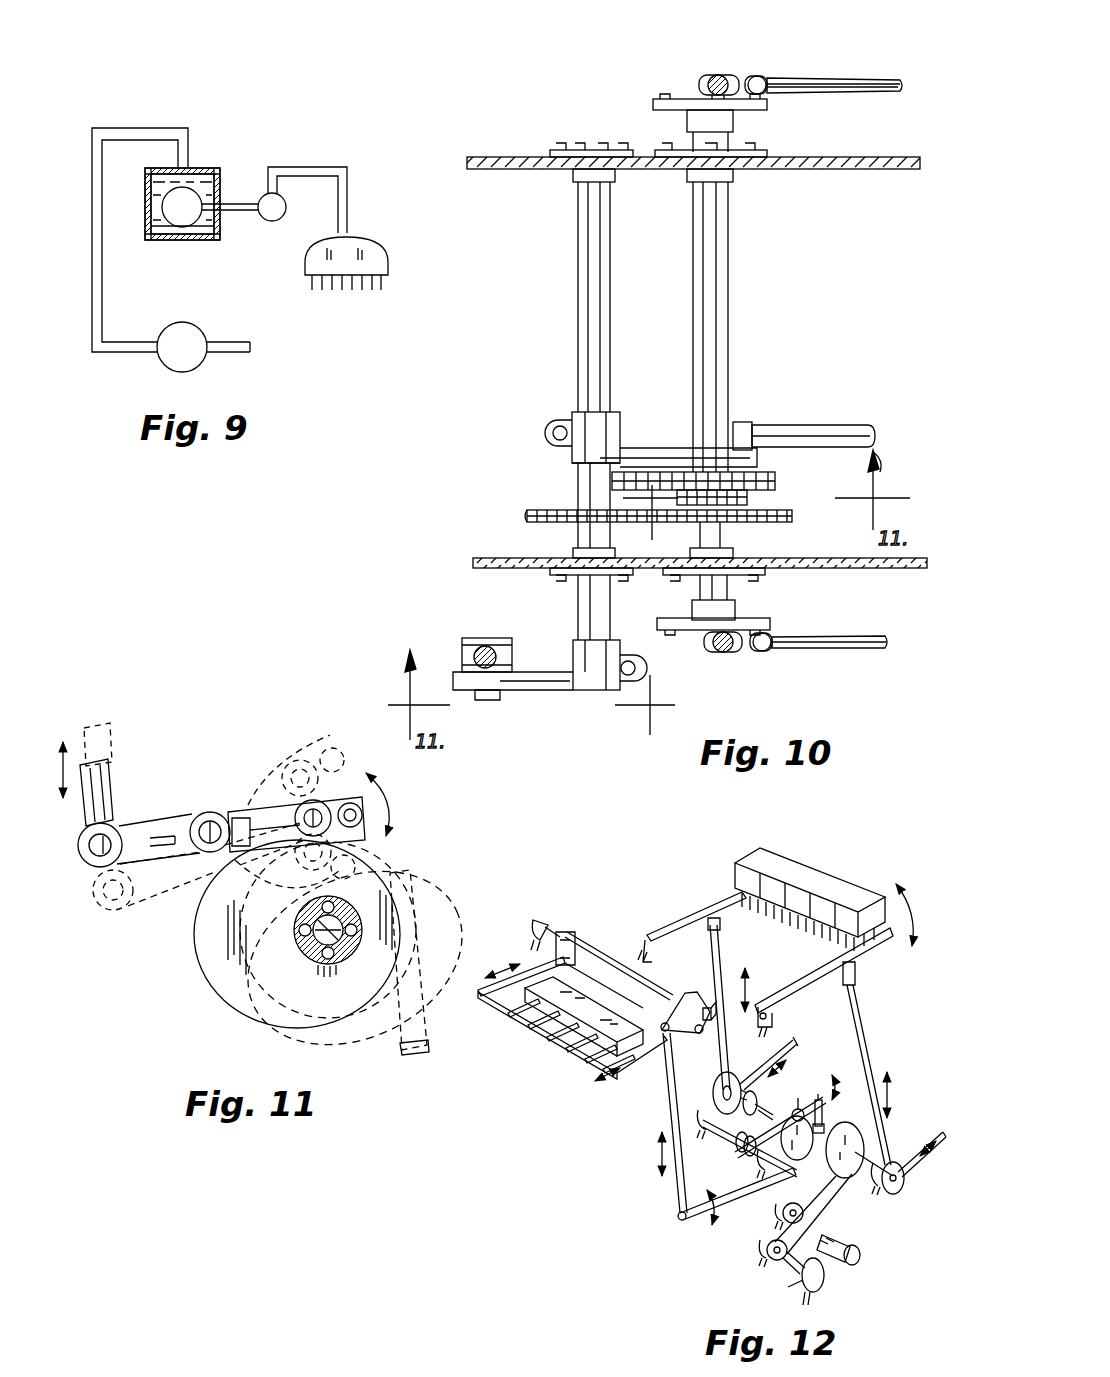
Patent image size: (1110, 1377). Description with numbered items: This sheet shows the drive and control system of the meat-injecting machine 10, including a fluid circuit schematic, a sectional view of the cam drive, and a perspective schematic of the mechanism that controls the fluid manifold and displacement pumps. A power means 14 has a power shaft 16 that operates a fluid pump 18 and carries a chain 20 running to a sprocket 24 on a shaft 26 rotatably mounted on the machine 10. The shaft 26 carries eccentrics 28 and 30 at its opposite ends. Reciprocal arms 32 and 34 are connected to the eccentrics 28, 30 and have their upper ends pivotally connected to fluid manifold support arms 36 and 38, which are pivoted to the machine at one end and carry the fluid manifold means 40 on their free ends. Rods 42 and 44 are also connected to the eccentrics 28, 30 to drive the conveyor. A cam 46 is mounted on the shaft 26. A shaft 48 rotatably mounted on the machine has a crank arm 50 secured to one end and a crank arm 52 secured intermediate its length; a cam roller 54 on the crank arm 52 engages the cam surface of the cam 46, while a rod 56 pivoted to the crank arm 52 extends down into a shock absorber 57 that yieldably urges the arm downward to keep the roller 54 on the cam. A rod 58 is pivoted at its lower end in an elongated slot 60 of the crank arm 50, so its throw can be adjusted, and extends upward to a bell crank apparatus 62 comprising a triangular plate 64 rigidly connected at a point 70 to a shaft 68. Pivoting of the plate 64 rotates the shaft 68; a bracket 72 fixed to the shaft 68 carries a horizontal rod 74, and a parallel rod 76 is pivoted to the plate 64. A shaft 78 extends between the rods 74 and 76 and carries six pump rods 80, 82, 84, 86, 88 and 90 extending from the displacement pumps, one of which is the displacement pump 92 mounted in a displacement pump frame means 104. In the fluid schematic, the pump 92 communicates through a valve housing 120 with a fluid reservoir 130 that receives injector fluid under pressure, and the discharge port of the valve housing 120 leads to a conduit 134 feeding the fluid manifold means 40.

In FIG. 10, the machine 10 is at (893, 572).
In FIG. 12, the power means 14 is at (848, 1240).
In FIG. 12, the power shaft 16 is at (772, 1260).
In FIG. 9, the fluid pump 18 is at (196, 328).
In FIG. 12, the fluid pump 18 is at (824, 1280).
In FIG. 10, the chain 20 is at (527, 516).
In FIG. 12, the chain 20 is at (825, 1198).
In FIG. 10, the sprocket 24 is at (792, 517).
In FIG. 12, the sprocket 24 is at (862, 1140).
In FIG. 10, the shaft 26 is at (728, 278).
In FIG. 11, the shaft 26 is at (300, 926).
In FIG. 12, the shaft 26 is at (897, 1190).
In FIG. 10, the eccentric 28 is at (662, 99).
In FIG. 12, the eccentric 28 is at (718, 1090).
In FIG. 10, the eccentric 30 is at (770, 624).
In FIG. 12, the eccentric 30 is at (904, 1184).
In FIG. 10, the reciprocal arm 32 is at (720, 74).
In FIG. 12, the reciprocal arm 32 is at (720, 962).
In FIG. 10, the reciprocal arm 34 is at (724, 654).
In FIG. 12, the reciprocal arm 34 is at (862, 1030).
In FIG. 12, the fluid manifold support arm 36 is at (718, 896).
In FIG. 12, the fluid manifold support arm 38 is at (858, 950).
In FIG. 9, the fluid manifold means 40 is at (380, 235).
In FIG. 12, the fluid manifold means 40 is at (826, 858).
In FIG. 10, the rod 42 is at (860, 80).
In FIG. 12, the rod 42 is at (780, 1040).
In FIG. 10, the rod 44 is at (870, 648).
In FIG. 12, the rod 44 is at (940, 1135).
In FIG. 10, the cam 46 is at (777, 482).
In FIG. 11, the cam 46 is at (225, 996).
In FIG. 12, the cam 46 is at (803, 1158).
In FIG. 10, the shaft 48 is at (578, 292).
In FIG. 11, the shaft 48 is at (212, 820).
In FIG. 12, the shaft 48 is at (728, 1133).
In FIG. 10, the crank arm 50 is at (545, 683).
In FIG. 11, the crank arm 50 is at (175, 818).
In FIG. 12, the crank arm 50 is at (682, 1220).
In FIG. 10, the crank arm 52 is at (658, 448).
In FIG. 11, the crank arm 52 is at (270, 810).
In FIG. 12, the crank arm 52 is at (770, 1128).
In FIG. 10, the cam roller 54 is at (747, 498).
In FIG. 11, the cam roller 54 is at (303, 760).
In FIG. 12, the cam roller 54 is at (802, 1108).
In FIG. 10, the rod 56 is at (840, 427).
In FIG. 11, the rod 56 is at (400, 1052).
In FIG. 12, the rod 56 is at (825, 1112).
In FIG. 12, the shock absorber 57 is at (826, 1129).
In FIG. 10, the rod 58 is at (480, 645).
In FIG. 11, the rod 58 is at (112, 763).
In FIG. 12, the rod 58 is at (676, 1180).
In FIG. 11, the elongated slot 60 is at (148, 840).
In FIG. 12, the bell crank apparatus 62 is at (565, 925).
In FIG. 12, the triangular-shaped plate 64 is at (672, 1000).
In FIG. 12, the shaft 68 is at (606, 962).
In FIG. 12, the connection 70 is at (708, 1006).
In FIG. 12, the bracket 72 is at (575, 935).
In FIG. 12, the rod 74 is at (530, 978).
In FIG. 12, the rod 76 is at (660, 1080).
In FIG. 12, the shaft 78 is at (492, 996).
In FIG. 12, the pump rod 80 is at (508, 1016).
In FIG. 12, the pump rod 82 is at (528, 1028).
In FIG. 12, the pump rod 84 is at (547, 1040).
In FIG. 12, the pump rod 86 is at (566, 1051).
In FIG. 12, the pump rod 88 is at (585, 1062).
In FIG. 12, the pump rod 90 is at (604, 1072).
In FIG. 9, the displacement pump 92 is at (186, 224).
In FIG. 9, the displacement pump frame means 104 is at (214, 162).
In FIG. 12, the displacement pump frame means 104 is at (607, 1012).
In FIG. 9, the valve housing 120 is at (277, 222).
In FIG. 9, the fluid reservoir 130 is at (152, 238).
In FIG. 9, the conduit 134 is at (325, 167).